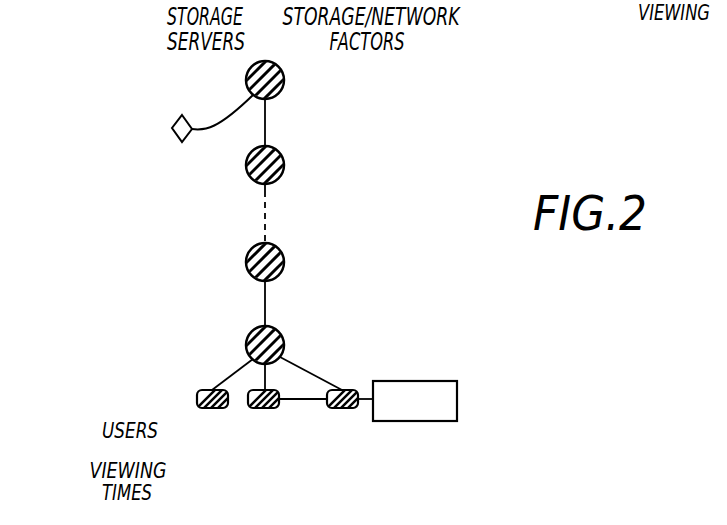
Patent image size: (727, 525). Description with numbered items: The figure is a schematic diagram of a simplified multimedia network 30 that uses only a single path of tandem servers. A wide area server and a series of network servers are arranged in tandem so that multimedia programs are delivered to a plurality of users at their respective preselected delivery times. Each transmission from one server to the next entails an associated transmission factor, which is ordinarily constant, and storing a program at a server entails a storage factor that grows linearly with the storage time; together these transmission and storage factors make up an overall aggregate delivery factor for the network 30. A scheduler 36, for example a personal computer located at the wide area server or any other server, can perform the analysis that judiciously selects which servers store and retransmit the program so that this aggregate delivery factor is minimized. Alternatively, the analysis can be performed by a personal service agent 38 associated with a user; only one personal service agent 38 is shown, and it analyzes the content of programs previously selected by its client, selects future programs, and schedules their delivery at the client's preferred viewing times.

The multimedia network 30 is at (158, 166).
The scheduler 36 is at (175, 119).
The personal service agent 38 is at (457, 401).